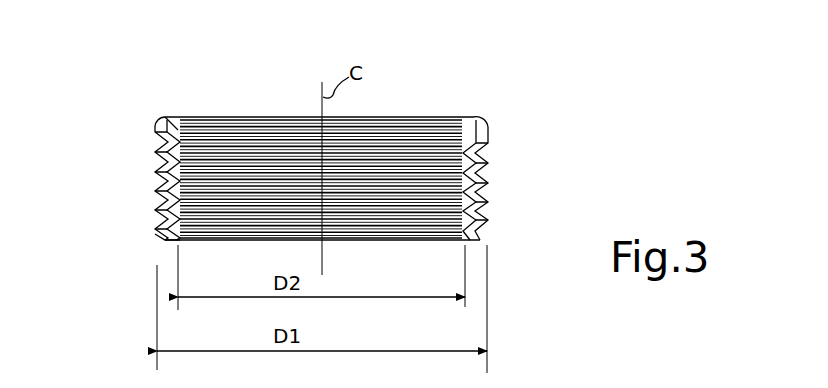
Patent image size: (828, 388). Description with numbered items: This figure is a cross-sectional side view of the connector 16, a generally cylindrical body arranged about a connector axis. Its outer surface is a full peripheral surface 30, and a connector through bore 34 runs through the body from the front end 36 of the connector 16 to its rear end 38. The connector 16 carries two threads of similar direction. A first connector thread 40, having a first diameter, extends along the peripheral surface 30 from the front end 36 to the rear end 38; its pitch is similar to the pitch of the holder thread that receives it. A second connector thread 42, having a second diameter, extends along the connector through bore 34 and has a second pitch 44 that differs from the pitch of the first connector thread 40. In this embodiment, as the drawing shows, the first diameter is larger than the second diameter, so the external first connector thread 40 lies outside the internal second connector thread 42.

The connector 16 is at (540, 88).
The peripheral surface 30 is at (140, 170).
The connector through bore 34 is at (263, 125).
The front end 36 is at (165, 116).
The rear end 38 is at (164, 244).
The first connector thread 40 is at (492, 159).
The second connector thread 42 is at (462, 152).
The second pitch 44 is at (200, 135).